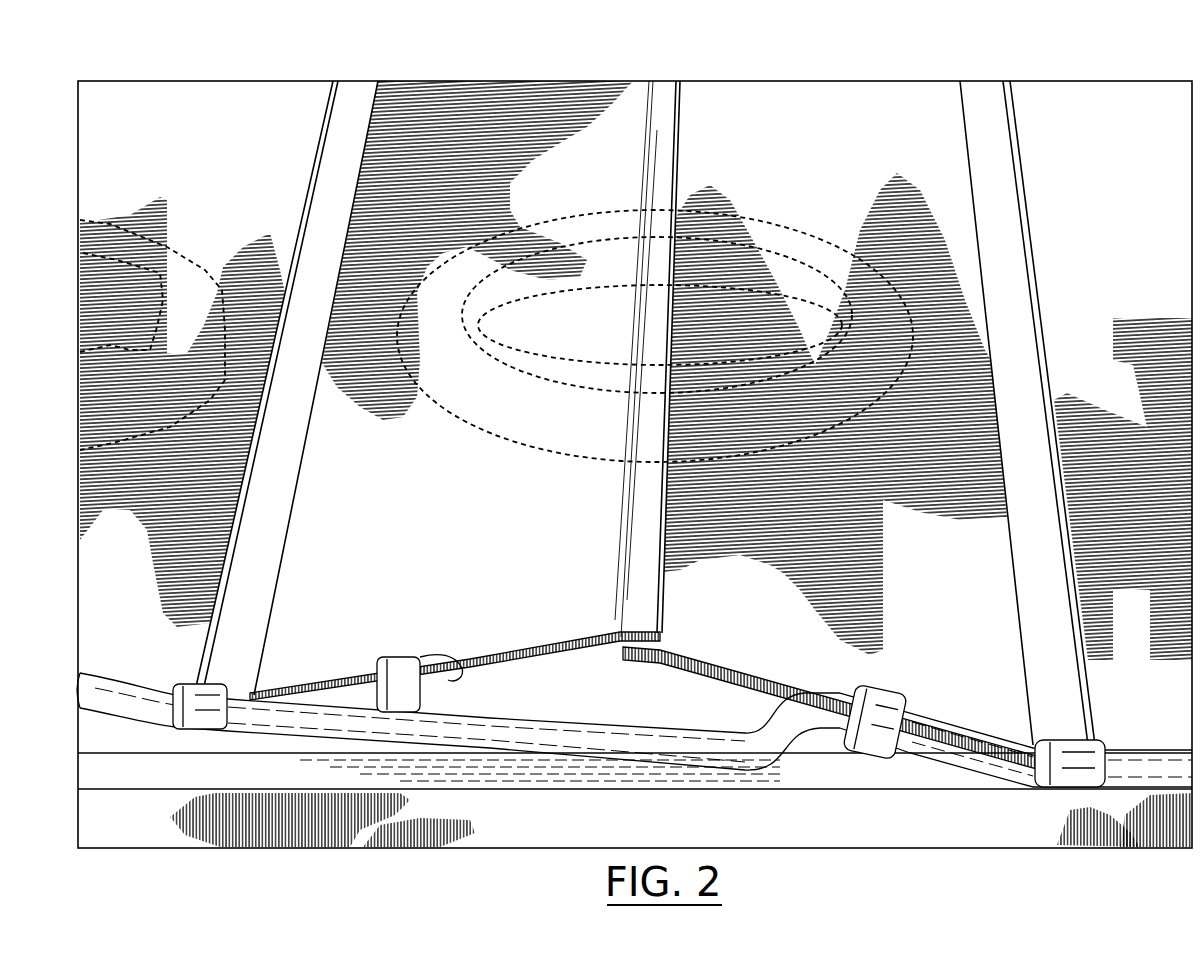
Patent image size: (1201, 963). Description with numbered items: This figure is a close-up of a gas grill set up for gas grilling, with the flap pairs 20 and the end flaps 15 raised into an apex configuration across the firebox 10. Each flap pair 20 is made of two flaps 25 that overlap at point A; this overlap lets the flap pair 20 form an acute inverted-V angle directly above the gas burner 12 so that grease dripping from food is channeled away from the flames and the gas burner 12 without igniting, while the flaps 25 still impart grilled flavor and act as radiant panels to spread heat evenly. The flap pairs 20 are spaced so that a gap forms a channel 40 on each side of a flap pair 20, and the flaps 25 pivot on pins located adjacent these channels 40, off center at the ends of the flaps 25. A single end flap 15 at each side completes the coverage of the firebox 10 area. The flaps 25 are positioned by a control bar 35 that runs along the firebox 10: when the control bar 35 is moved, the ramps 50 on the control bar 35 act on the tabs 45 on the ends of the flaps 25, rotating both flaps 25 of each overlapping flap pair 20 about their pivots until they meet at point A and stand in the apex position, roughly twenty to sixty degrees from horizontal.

The firebox 10 is at (851, 836).
The gas burner 12 is at (102, 220).
The end flap 15 is at (1123, 97).
The flap pair 20 is at (722, 63).
The flap 25 is at (248, 97).
The control bar 35 is at (627, 747).
The channel 40 is at (348, 127).
The tab 45 is at (203, 693).
The ramp 50 is at (980, 747).
The point A is at (663, 643).